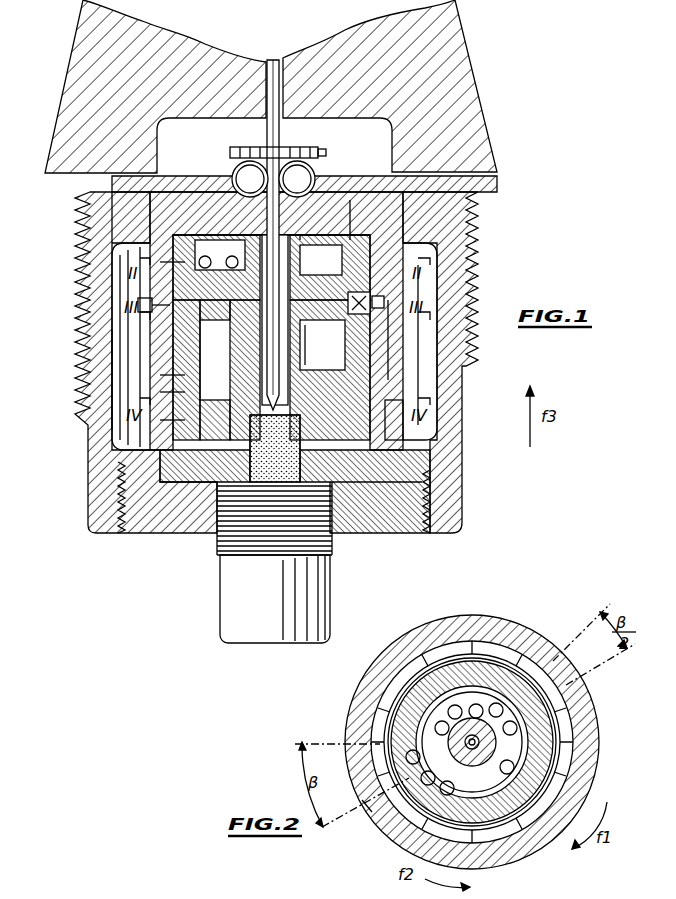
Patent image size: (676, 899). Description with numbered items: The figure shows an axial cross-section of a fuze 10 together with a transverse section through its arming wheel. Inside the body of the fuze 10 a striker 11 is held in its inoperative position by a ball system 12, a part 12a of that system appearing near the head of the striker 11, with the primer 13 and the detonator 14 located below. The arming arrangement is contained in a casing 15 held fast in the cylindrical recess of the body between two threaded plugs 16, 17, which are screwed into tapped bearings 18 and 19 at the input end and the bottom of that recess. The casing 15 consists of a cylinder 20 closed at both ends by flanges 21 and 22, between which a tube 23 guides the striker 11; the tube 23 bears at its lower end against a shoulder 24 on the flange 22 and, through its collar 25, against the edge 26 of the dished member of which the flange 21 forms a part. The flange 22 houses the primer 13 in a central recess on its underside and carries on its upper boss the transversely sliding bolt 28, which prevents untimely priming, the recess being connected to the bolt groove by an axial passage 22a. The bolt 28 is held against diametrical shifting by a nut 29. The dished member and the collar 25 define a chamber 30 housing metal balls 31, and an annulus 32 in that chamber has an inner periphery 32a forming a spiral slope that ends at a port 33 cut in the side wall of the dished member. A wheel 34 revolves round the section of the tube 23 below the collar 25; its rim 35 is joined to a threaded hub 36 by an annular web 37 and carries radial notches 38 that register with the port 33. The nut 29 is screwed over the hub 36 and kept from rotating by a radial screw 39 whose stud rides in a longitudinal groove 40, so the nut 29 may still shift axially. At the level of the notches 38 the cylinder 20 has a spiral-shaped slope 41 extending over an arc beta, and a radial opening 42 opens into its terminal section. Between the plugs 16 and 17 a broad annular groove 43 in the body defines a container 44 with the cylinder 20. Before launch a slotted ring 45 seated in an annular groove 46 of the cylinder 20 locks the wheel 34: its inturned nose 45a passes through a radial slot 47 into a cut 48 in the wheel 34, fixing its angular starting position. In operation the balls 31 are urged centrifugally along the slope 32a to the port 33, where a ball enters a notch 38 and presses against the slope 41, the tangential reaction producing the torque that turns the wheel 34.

In FIG. 1, the fuze 10 is at (474, 40).
In FIG. 1, the striker 11 is at (268, 62).
In FIG. 1, the ball system 12 is at (284, 140).
In FIG. 1, the plate tab 12a is at (320, 150).
In FIG. 1, the primer 13 is at (322, 452).
In FIG. 1, the detonator 14 is at (322, 598).
In FIG. 1, the casing 15 is at (412, 376).
In FIG. 1, the threaded plug 16 is at (412, 176).
In FIG. 1, the threaded plug 17 is at (415, 496).
In FIG. 1, the tapped bearing 18 is at (95, 200).
In FIG. 1, the tapped bearing 19 is at (112, 486).
In FIG. 1, the cylinder 20 is at (402, 432).
In FIG. 1, the flange 21 is at (445, 238).
In FIG. 1, the flange 22 is at (432, 468).
In FIG. 1, the axial passage 22a is at (193, 535).
In FIG. 1, the tube 23 is at (310, 340).
In FIG. 1, the shoulder 24 is at (345, 478).
In FIG. 1, the collar 25 is at (432, 262).
In FIG. 1, the edge 26 is at (347, 212).
In FIG. 1, the bolt 28 is at (210, 398).
In FIG. 1, the nut 29 is at (180, 378).
In FIG. 1, the chamber 30 is at (322, 200).
In FIG. 1, the metal balls 31 is at (330, 267).
In FIG. 1, the annulus 32 is at (350, 212).
In FIG. 2, the annulus 32 is at (490, 690).
In FIG. 1, the port 33 is at (205, 200).
In FIG. 2, the port 33 is at (395, 722).
In FIG. 1, the wheel 34 is at (216, 370).
In FIG. 1, the rim 35 is at (208, 358).
In FIG. 1, the threaded hub 36 is at (318, 360).
In FIG. 1, the annular web 37 is at (216, 265).
In FIG. 1, the radial notches 38 is at (160, 242).
In FIG. 2, the radial notches 38 is at (440, 660).
In FIG. 1, the radial screw 39 is at (155, 392).
In FIG. 1, the longitudinal groove 40 is at (180, 420).
In FIG. 2, the spiral-shaped slope 41 is at (412, 742).
In FIG. 1, the radial opening 42 is at (172, 268).
In FIG. 2, the radial opening 42 is at (364, 796).
In FIG. 1, the annular groove 43 is at (440, 292).
In FIG. 1, the container 44 is at (428, 366).
In FIG. 1, the slotted ring 45 is at (138, 302).
In FIG. 1, the inturned nose 45a is at (396, 301).
In FIG. 1, the annular groove 46 is at (120, 330).
In FIG. 1, the radial slot 47 is at (401, 338).
In FIG. 1, the cut 48 is at (352, 308).
In FIG. 2, the inner periphery 32a is at (528, 758).